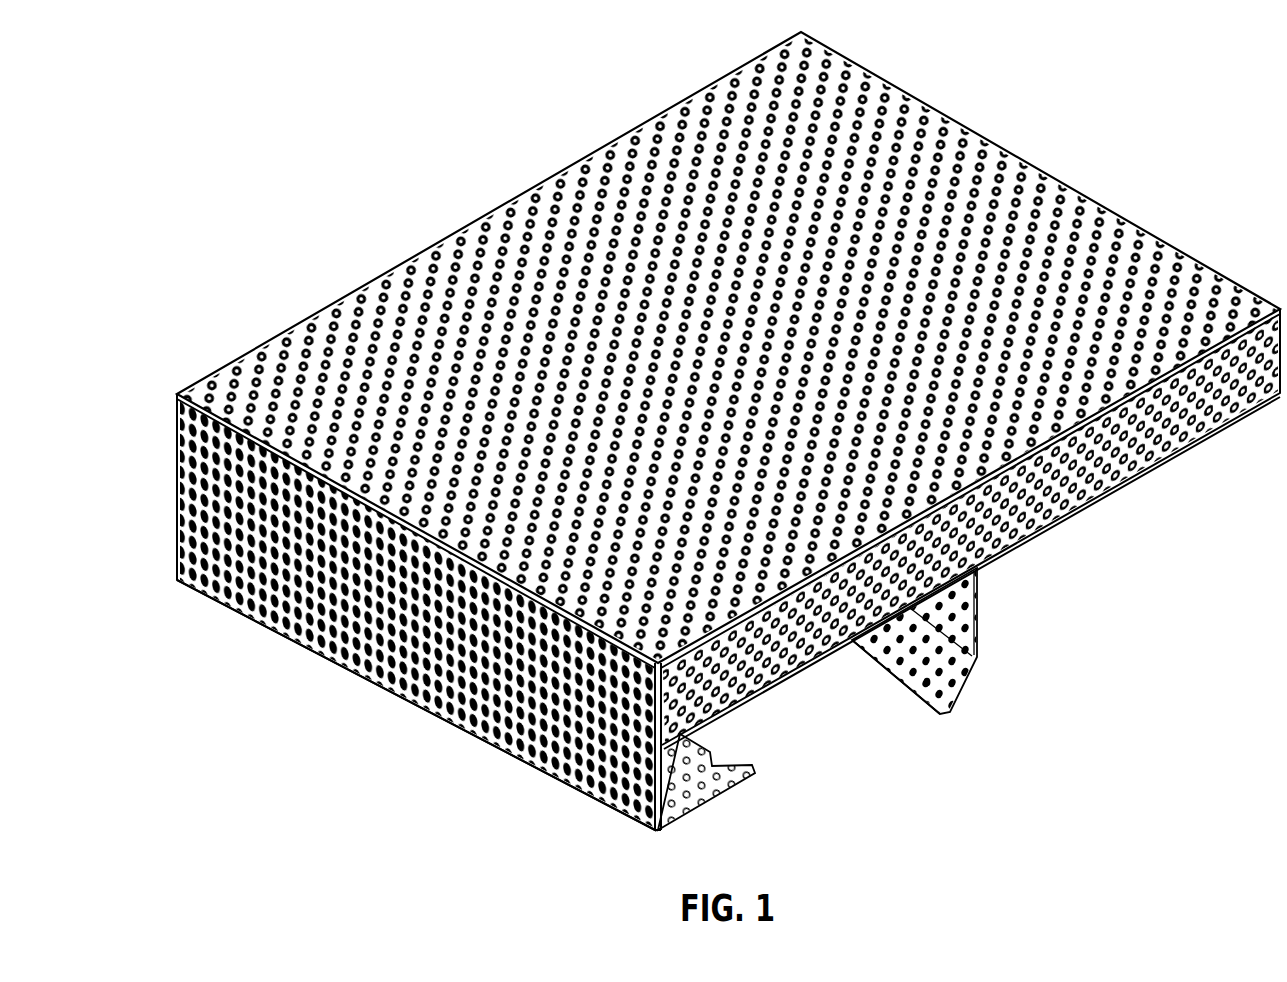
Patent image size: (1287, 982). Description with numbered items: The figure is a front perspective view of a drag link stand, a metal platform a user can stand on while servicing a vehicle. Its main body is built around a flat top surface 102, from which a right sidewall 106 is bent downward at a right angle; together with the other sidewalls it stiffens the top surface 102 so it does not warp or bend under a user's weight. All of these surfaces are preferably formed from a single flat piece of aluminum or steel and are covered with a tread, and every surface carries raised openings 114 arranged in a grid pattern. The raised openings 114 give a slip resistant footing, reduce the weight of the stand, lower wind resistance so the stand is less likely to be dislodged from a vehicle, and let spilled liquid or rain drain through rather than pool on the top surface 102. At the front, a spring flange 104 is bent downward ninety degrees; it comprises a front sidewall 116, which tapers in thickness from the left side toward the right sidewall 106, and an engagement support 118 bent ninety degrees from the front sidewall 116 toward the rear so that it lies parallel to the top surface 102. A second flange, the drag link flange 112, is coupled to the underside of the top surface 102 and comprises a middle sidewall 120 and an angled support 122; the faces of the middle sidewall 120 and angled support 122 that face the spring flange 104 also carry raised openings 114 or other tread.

The top surface 102 is at (870, 95).
The spring flange 104 is at (250, 592).
The right sidewall 106 is at (1170, 458).
The drag link flange 112 is at (927, 688).
The raised openings 114 is at (337, 314).
The front sidewall 116 is at (614, 810).
The engagement support 118 is at (744, 788).
The middle sidewall 120 is at (976, 617).
The angled support 122 is at (888, 658).